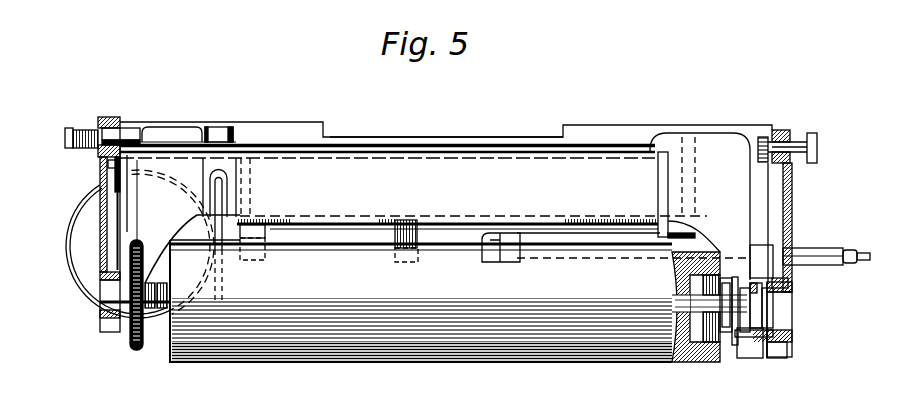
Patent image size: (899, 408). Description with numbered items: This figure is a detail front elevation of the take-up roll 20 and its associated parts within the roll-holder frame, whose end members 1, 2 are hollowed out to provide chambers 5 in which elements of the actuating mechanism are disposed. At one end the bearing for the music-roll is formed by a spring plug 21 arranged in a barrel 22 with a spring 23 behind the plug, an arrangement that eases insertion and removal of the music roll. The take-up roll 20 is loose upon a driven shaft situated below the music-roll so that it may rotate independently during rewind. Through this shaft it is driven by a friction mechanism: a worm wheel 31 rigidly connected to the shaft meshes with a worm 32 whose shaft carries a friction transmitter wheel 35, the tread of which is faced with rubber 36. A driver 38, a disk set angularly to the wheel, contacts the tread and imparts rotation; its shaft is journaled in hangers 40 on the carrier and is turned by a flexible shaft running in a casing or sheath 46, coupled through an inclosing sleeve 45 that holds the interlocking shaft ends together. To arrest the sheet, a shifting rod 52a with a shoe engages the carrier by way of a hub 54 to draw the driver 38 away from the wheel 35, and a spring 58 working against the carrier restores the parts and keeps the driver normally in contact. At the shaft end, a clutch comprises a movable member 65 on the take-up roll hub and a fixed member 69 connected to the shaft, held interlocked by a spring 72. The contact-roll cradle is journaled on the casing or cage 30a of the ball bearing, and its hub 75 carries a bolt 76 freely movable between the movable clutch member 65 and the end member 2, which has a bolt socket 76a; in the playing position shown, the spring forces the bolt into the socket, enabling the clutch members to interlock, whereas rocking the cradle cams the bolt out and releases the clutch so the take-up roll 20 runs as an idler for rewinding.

The end member 1 is at (98, 197).
The end member 2 is at (792, 198).
The chamber 5 is at (112, 228).
The take-up roll 20 is at (421, 301).
The spring plug 21 is at (130, 138).
The barrel 22 is at (85, 128).
The spring 23 is at (85, 154).
The casing or cage of the ball bearing 30a is at (762, 307).
The worm wheel 31 is at (128, 335).
The worm 32 is at (138, 238).
The friction transmitter wheel 35 is at (72, 268).
The rubber facing 36 is at (78, 292).
The driver 38 is at (222, 210).
The hanger 40 is at (268, 237).
The inclosing sleeve 45 is at (859, 257).
The casing or sheath 46 is at (837, 261).
The shifting rod 52a is at (446, 172).
The hub 54 is at (700, 228).
The spring 58 is at (658, 193).
The movable clutch member 65 is at (727, 335).
The fixed clutch member 69 is at (734, 337).
The spring 72 is at (710, 340).
The hub of the cradle 75 is at (787, 300).
The bolt 76 is at (755, 345).
The bolt socket 76a is at (788, 342).